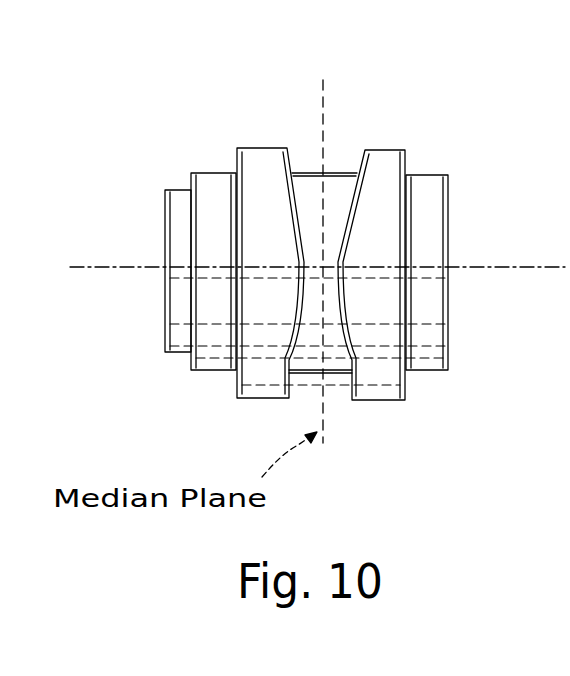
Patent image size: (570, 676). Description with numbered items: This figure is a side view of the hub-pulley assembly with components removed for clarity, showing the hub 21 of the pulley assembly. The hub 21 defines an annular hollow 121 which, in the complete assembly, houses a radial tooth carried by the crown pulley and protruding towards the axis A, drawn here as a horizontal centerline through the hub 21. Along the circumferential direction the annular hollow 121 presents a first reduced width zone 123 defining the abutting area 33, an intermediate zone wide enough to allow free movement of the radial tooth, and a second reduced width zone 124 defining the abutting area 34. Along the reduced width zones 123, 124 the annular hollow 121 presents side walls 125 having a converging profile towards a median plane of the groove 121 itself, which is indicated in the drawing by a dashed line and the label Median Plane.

The hub 21 is at (210, 207).
The abutting area 33 is at (300, 228).
The abutting area 34 is at (340, 291).
The side walls 125 is at (300, 311).
The annular hollow 121 is at (333, 166).
The first reduced width zone 123 is at (326, 224).
The second reduced width zone 124 is at (320, 312).
The axis A is at (80, 266).